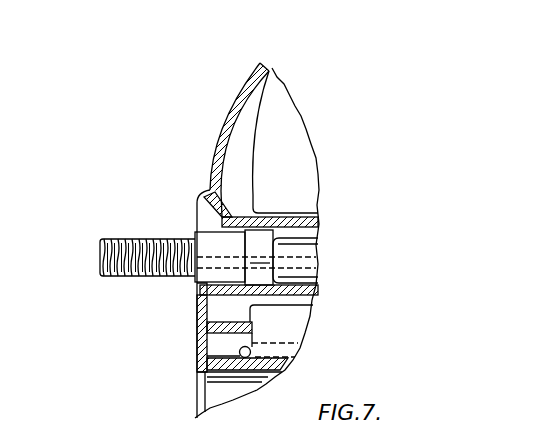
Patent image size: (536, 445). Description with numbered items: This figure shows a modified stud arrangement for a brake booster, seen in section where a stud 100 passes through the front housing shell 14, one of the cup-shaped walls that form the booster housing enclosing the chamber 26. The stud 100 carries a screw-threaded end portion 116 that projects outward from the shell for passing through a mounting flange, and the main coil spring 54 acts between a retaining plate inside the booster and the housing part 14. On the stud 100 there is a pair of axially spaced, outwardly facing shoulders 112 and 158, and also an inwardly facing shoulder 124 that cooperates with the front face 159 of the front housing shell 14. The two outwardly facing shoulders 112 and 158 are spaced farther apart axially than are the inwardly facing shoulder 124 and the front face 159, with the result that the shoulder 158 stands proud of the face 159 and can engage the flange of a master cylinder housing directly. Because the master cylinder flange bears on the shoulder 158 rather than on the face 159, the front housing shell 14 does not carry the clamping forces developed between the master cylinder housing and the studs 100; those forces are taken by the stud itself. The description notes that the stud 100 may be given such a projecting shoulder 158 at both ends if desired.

The front housing shell 14 is at (222, 135).
The chamber 26 is at (296, 171).
The main coil spring 54 is at (247, 360).
The stud 100 is at (303, 250).
The shoulder 112 is at (197, 281).
The screw-threaded end portion 116 is at (118, 278).
The inwardly facing shoulder 124 is at (252, 231).
The shoulder 158 is at (195, 232).
The front face 159 is at (198, 204).